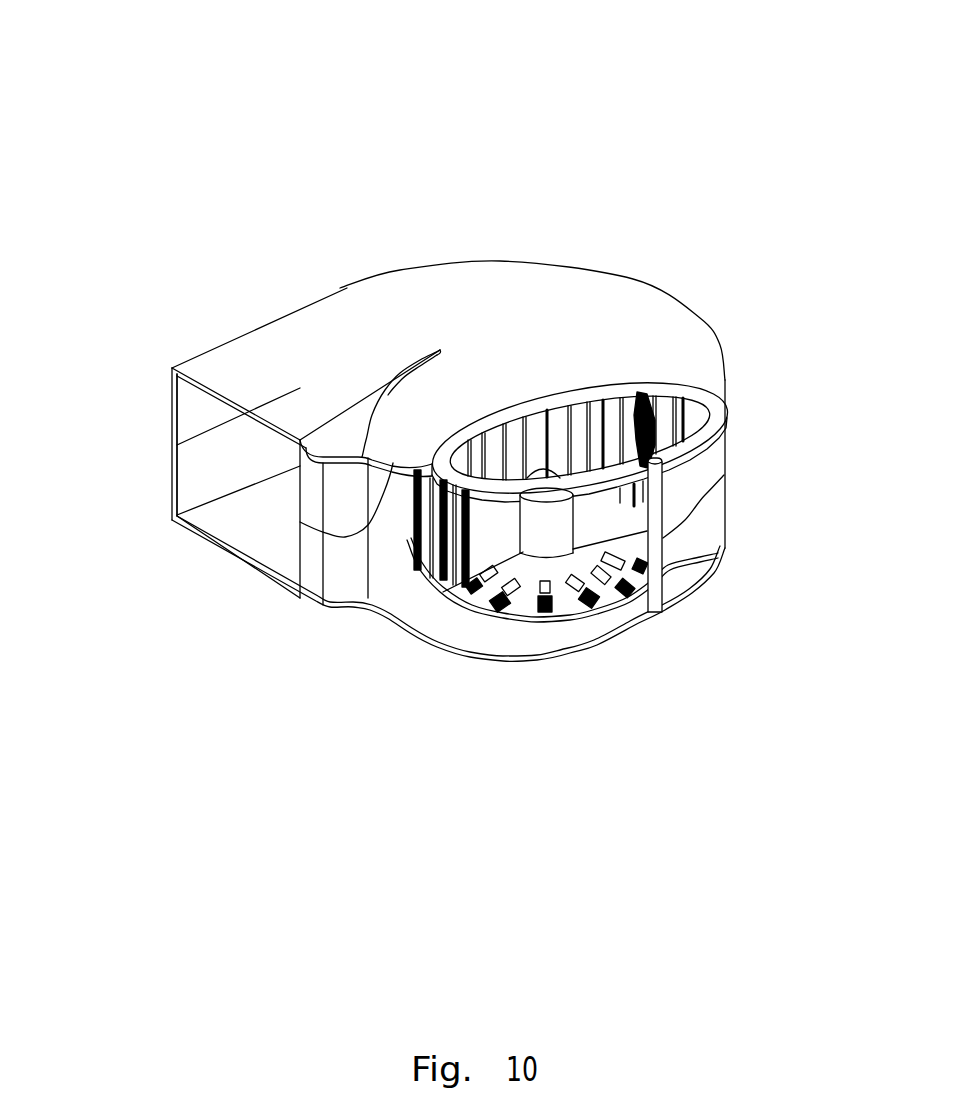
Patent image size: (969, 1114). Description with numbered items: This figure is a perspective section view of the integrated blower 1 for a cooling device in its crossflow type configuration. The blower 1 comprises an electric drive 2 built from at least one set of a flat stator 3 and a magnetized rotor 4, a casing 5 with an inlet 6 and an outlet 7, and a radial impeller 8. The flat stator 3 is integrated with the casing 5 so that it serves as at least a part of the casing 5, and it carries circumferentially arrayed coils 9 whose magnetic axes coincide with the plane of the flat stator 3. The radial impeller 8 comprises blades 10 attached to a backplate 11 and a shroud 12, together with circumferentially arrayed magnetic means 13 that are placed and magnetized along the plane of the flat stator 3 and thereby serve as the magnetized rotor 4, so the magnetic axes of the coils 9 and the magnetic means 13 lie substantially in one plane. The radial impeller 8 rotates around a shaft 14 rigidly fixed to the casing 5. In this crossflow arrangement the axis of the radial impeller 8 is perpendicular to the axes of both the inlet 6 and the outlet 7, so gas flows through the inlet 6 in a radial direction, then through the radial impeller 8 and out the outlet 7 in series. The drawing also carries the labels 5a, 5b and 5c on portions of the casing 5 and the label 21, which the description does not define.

The integrated blower 1 is at (737, 203).
The electric drive 2 is at (643, 623).
The flat stator 3 is at (525, 595).
The magnetized rotor 4 is at (440, 515).
The casing 5 is at (300, 342).
The top plate of housing 5a is at (533, 318).
The outlet opening 5b is at (222, 525).
The duct inner wall 5c is at (237, 442).
The inlet 6 is at (554, 598).
The outlet 7 is at (278, 538).
The radial impeller 8 is at (424, 505).
The coils 9 is at (592, 595).
The blades 10 is at (632, 408).
The backplate 11 is at (656, 575).
The shroud 12 is at (656, 473).
The magnetic means 13 is at (553, 567).
The shaft 14 is at (556, 518).
The tongue of scroll housing 21 is at (347, 432).